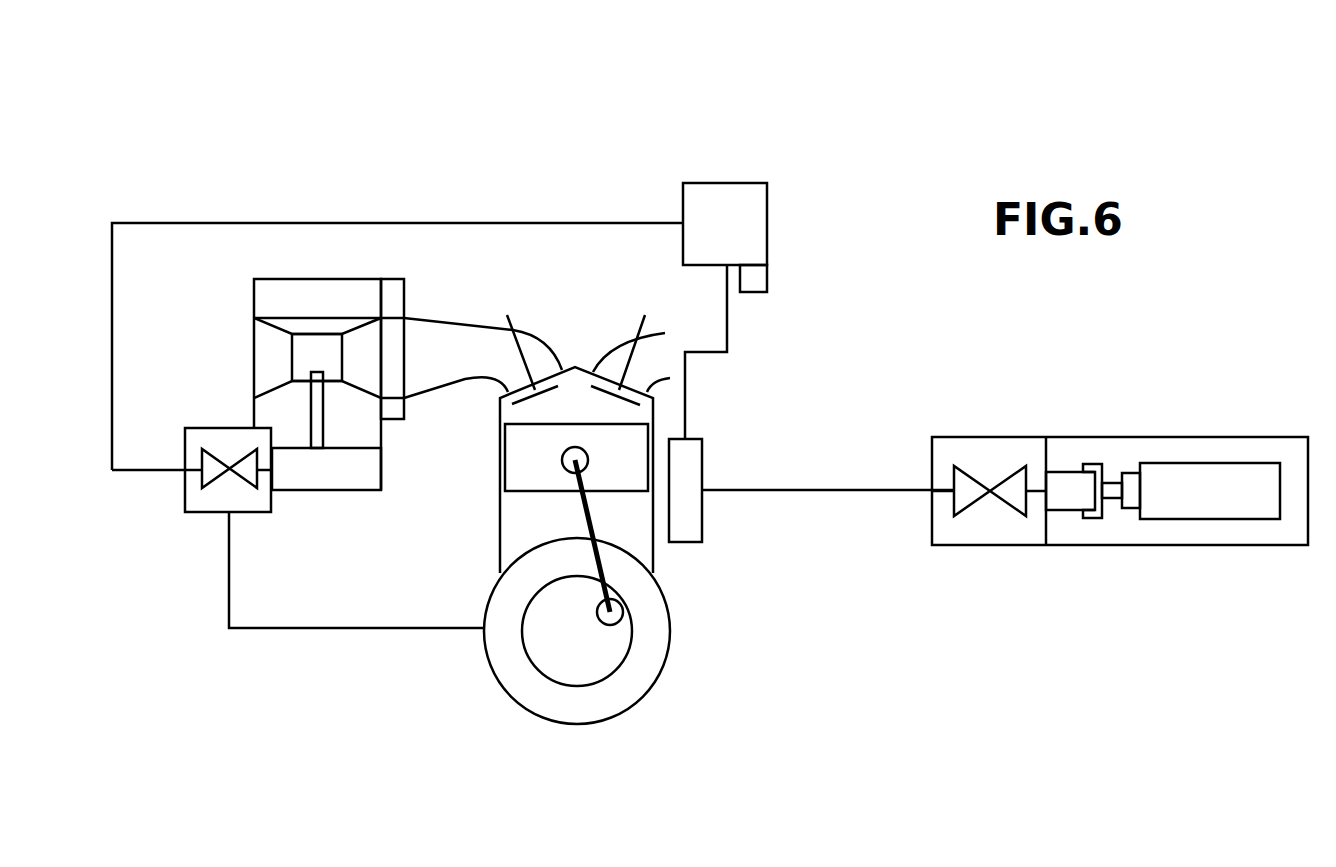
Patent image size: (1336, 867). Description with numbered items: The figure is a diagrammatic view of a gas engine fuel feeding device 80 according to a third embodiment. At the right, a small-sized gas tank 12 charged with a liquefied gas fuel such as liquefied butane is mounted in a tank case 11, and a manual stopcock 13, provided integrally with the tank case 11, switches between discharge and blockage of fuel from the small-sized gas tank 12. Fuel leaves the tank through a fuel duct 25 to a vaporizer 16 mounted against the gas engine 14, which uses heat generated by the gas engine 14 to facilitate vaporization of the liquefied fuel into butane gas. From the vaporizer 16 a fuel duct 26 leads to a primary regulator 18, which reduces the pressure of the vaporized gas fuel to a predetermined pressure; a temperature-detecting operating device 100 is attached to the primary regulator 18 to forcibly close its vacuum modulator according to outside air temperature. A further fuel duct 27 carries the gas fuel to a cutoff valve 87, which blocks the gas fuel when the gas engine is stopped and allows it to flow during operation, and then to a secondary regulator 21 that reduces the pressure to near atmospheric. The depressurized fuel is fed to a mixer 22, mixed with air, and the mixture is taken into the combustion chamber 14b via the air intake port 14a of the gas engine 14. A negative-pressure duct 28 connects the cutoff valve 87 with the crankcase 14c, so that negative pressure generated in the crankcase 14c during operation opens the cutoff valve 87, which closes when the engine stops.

The fuel feeding device 80 is at (183, 155).
The fuel duct 27 is at (335, 223).
The mixer 22 is at (276, 289).
The secondary regulator 21 is at (326, 492).
The cutoff valve 87 is at (213, 497).
The negative-pressure duct 28 is at (352, 632).
The gas engine 14 is at (635, 708).
The air intake port 14a is at (444, 330).
The combustion chamber 14b is at (510, 412).
The crankcase 14c is at (505, 692).
The vaporizer 16 is at (685, 543).
The fuel duct 26 is at (726, 332).
The primary regulator 18 is at (724, 193).
The temperature-detecting operating device 100 is at (755, 278).
The fuel duct 25 is at (822, 495).
The tank case 11 is at (1115, 535).
The manual stopcock 13 is at (1003, 508).
The small-sized gas tank 12 is at (1208, 478).